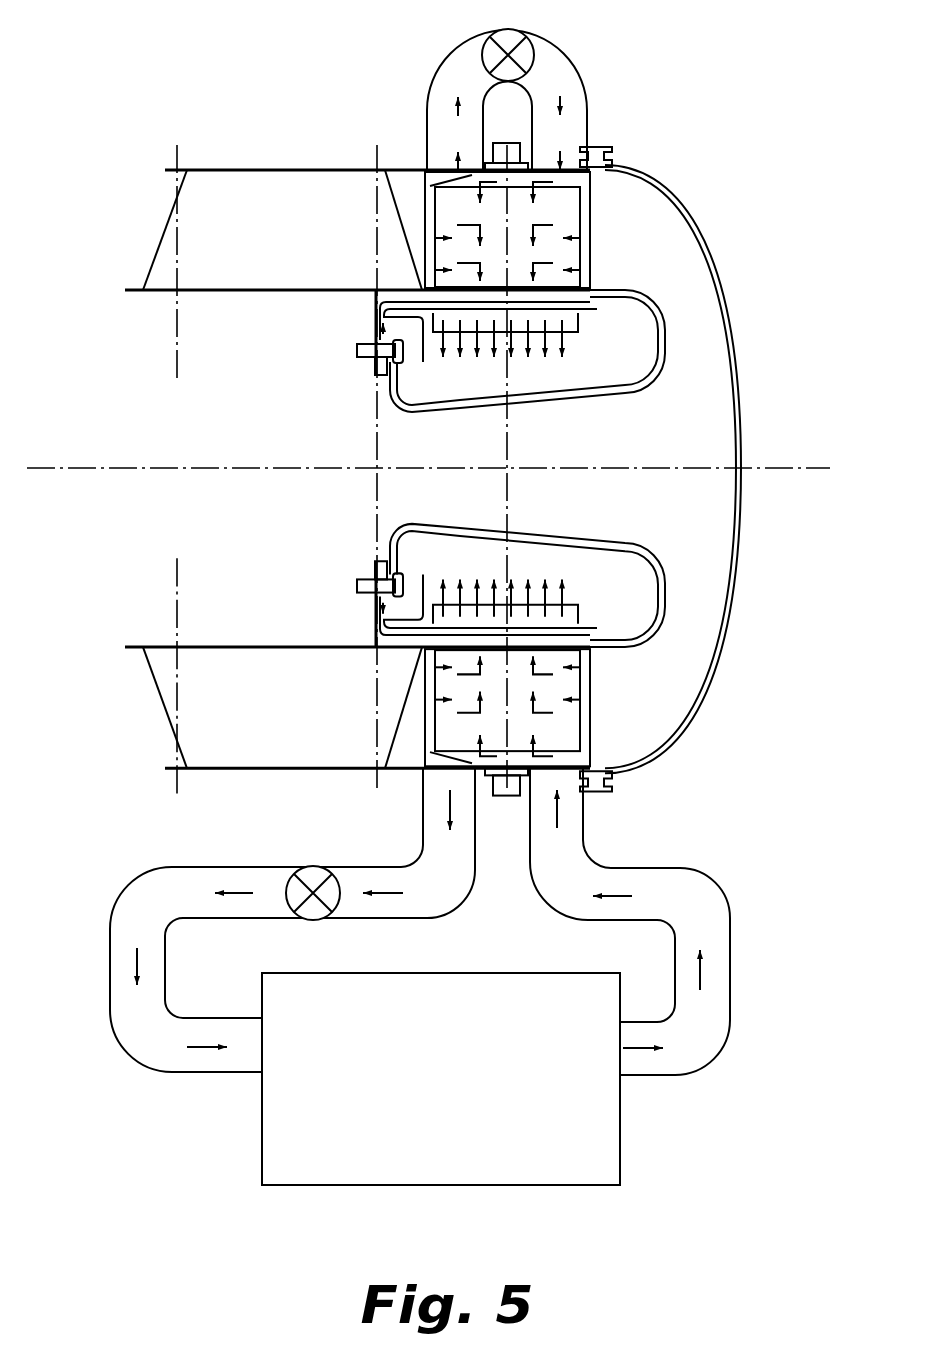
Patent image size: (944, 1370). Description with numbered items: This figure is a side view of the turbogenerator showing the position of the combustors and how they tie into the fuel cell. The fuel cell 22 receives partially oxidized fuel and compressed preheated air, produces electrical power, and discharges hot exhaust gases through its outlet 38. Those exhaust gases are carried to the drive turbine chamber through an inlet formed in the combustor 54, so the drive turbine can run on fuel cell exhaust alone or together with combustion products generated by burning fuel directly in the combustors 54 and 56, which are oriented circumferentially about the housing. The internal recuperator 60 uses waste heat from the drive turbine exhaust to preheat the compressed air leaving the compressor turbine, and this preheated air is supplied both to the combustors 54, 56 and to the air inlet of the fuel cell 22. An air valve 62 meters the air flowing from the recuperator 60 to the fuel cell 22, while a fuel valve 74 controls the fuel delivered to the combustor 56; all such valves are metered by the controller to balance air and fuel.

The fuel cell 22 is at (262, 1145).
The fuel cell exhaust outlet 38 is at (645, 1067).
The combustor 54 is at (563, 733).
The combustor 56 is at (580, 253).
The internal recuperator 60 is at (290, 207).
The air valve 62 is at (313, 867).
The fuel valve 74 is at (535, 53).